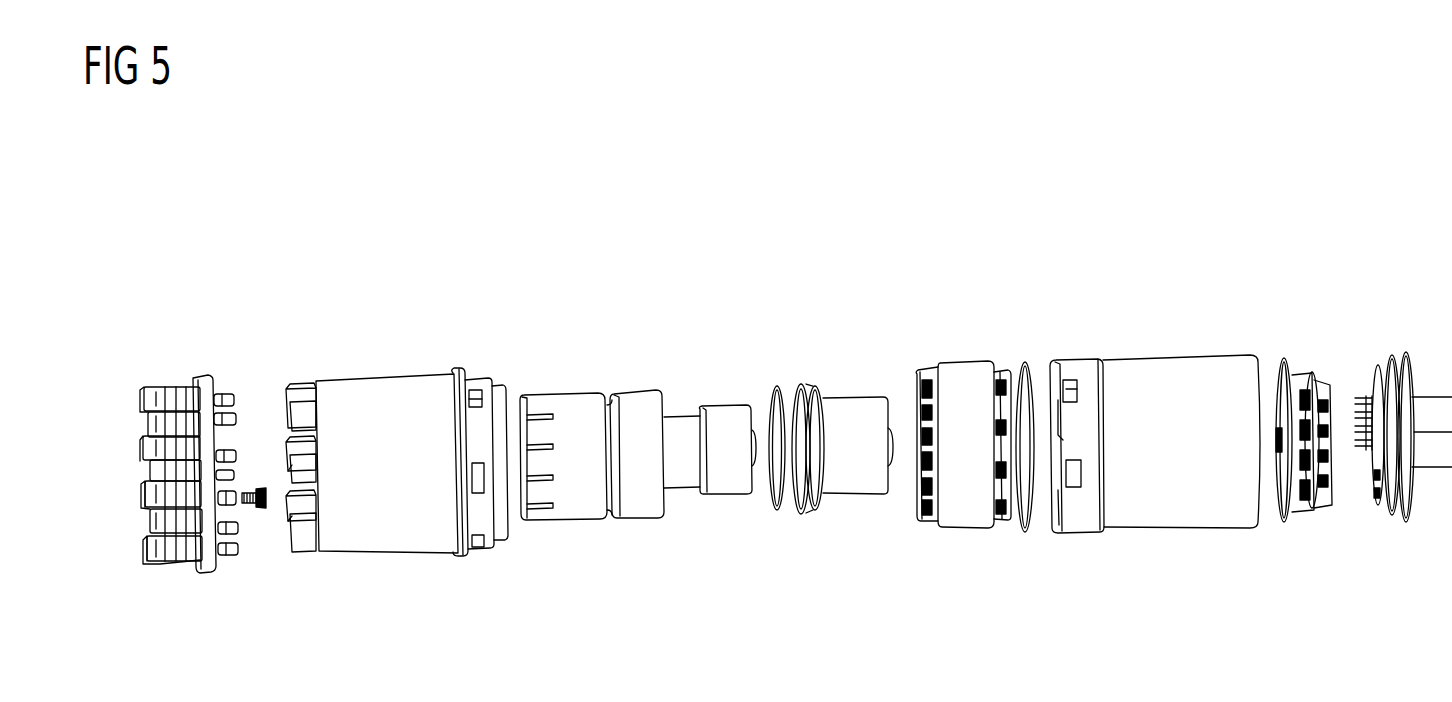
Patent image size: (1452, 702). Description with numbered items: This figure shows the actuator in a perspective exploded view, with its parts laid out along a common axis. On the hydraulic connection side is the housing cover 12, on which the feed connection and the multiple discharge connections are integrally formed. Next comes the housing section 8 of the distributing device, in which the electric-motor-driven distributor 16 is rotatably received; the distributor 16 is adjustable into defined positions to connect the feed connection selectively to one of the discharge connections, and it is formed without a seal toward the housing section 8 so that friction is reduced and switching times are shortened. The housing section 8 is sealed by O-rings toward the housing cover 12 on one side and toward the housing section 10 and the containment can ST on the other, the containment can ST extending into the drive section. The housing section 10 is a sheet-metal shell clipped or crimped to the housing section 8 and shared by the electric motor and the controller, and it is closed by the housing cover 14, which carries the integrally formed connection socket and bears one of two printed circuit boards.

The housing cover 12 is at (211, 383).
The housing section 8 is at (380, 406).
The distributor 16 is at (590, 378).
The containment can ST is at (838, 368).
The housing section 10 is at (1151, 388).
The housing cover 14 is at (1404, 352).